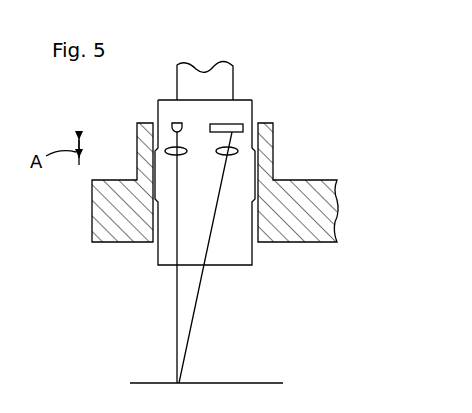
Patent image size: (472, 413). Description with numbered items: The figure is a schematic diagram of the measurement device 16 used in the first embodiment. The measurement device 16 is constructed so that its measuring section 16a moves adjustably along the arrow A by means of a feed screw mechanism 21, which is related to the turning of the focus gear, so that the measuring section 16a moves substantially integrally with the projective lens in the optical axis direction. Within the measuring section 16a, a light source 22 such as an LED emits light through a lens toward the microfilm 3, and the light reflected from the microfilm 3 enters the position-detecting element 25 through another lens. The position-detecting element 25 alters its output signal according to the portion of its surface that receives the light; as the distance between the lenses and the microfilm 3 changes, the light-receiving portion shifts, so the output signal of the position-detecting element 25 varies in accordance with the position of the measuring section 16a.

The microfilm 3 is at (247, 382).
The measurement device 16 is at (282, 134).
The measuring section 16a is at (234, 263).
The feed screw mechanism 21 is at (150, 222).
The light source 22 is at (171, 127).
The position-detecting element 25 is at (218, 123).